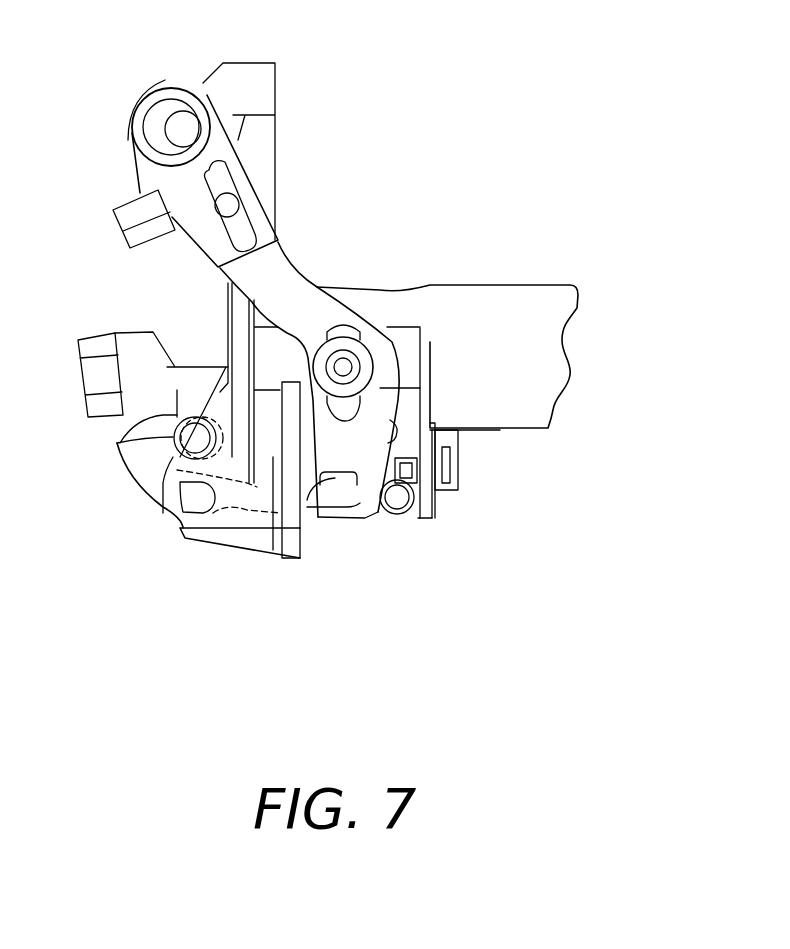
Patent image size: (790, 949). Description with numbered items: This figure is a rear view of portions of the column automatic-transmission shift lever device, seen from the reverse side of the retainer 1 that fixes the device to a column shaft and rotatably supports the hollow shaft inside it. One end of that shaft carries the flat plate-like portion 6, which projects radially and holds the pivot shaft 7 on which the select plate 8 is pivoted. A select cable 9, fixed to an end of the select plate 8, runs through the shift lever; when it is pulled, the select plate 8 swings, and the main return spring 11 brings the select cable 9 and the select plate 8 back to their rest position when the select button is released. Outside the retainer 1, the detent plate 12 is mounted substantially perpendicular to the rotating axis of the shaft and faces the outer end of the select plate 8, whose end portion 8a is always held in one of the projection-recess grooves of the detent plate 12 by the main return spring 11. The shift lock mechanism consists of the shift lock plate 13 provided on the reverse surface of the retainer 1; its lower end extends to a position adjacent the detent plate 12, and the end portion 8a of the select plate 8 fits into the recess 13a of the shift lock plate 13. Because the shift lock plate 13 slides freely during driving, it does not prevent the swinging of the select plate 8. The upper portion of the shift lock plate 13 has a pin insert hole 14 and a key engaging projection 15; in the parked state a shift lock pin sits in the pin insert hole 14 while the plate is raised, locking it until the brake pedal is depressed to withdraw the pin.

The retainer 1 is at (502, 303).
The flat plate-like portion 6 is at (230, 518).
The pivot shaft 7 is at (187, 500).
The select plate 8 is at (133, 467).
The end portion 8a is at (323, 522).
The select cable 9 is at (193, 366).
The main return spring 11 is at (117, 443).
The detent plate 12 is at (287, 542).
The shift lock plate 13 is at (287, 268).
The recess 13a is at (363, 523).
The pin insert hole 14 is at (150, 124).
The key engaging projection 15 is at (127, 217).